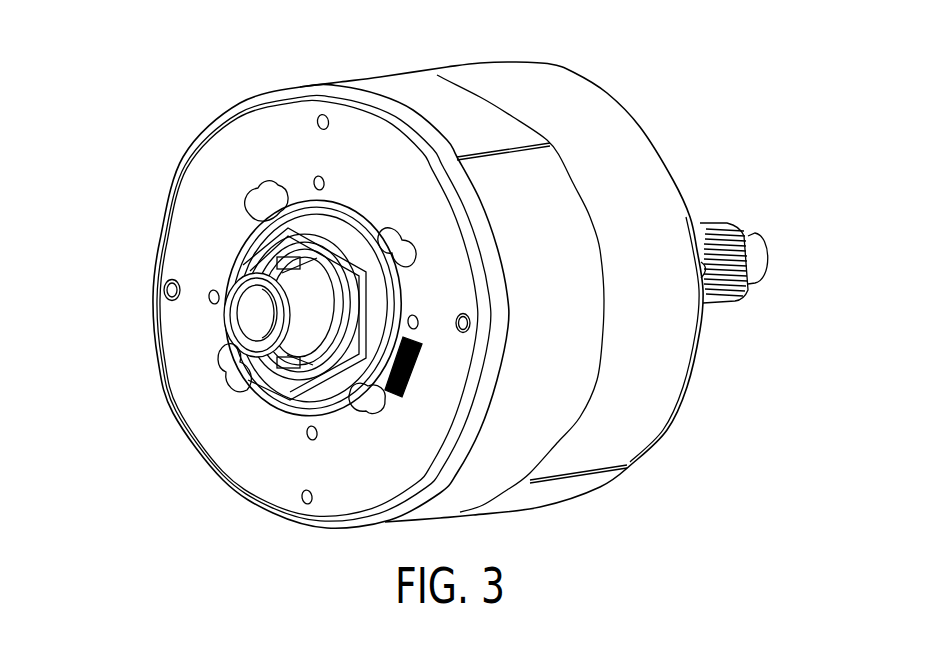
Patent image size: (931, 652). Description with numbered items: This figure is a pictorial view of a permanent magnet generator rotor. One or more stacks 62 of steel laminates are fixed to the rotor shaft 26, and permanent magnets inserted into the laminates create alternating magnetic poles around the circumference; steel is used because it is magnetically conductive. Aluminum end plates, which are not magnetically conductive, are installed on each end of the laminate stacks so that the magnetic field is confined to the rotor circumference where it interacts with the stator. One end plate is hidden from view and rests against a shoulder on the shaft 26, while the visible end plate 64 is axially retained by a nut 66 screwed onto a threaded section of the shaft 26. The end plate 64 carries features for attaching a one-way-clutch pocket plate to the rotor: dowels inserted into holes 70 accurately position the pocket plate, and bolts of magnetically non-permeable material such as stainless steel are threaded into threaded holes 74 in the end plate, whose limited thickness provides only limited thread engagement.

The stack of steel laminates 62 is at (385, 72).
The end plate 64 is at (167, 207).
The holes 70 is at (321, 114).
The threaded holes 74 is at (164, 284).
The rotor shaft 26 is at (222, 357).
The nut 66 is at (372, 393).